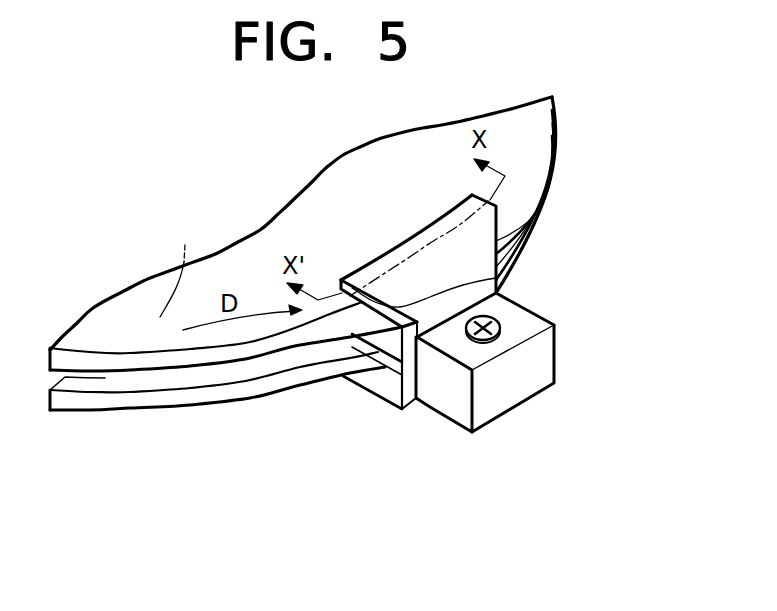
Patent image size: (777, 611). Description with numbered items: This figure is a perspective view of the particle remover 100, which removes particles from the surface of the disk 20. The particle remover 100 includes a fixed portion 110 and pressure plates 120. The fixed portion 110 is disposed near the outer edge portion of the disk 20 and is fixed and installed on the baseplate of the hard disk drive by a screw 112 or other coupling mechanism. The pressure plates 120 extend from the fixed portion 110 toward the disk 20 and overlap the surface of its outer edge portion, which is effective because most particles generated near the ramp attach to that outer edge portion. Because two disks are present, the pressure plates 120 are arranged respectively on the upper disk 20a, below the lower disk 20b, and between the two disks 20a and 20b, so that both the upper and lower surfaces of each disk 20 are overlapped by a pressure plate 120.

The disk 20 is at (303, 313).
The upper disk 20a is at (103, 363).
The lower disk 20b is at (209, 397).
The particle remover 100 is at (498, 329).
The fixed portion 110 is at (500, 397).
The screw 112 is at (588, 342).
The pressure plates 120 is at (380, 310).